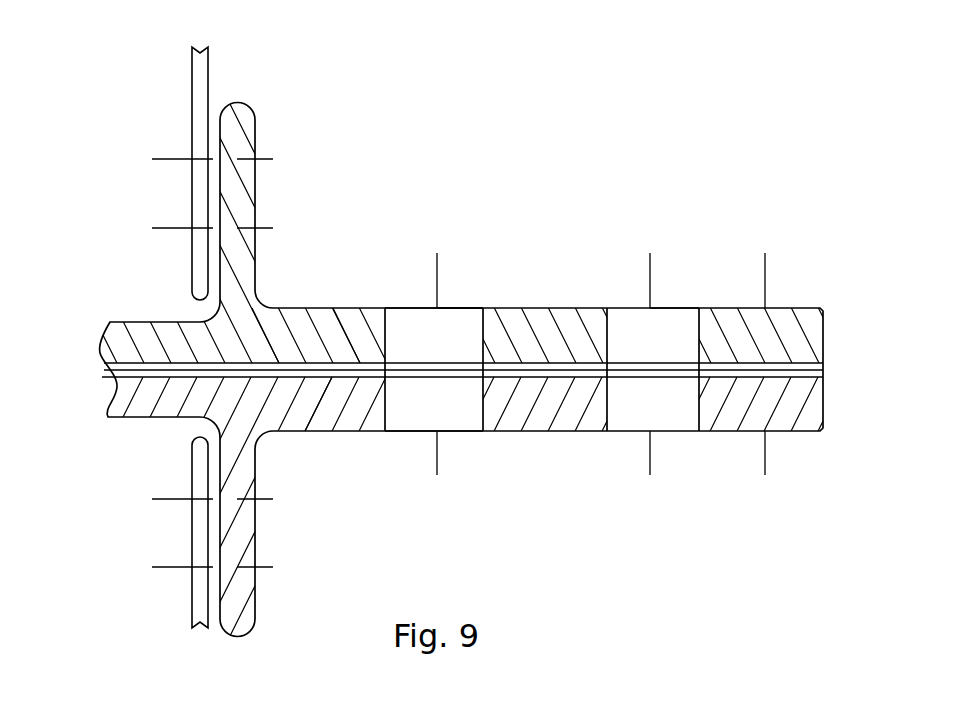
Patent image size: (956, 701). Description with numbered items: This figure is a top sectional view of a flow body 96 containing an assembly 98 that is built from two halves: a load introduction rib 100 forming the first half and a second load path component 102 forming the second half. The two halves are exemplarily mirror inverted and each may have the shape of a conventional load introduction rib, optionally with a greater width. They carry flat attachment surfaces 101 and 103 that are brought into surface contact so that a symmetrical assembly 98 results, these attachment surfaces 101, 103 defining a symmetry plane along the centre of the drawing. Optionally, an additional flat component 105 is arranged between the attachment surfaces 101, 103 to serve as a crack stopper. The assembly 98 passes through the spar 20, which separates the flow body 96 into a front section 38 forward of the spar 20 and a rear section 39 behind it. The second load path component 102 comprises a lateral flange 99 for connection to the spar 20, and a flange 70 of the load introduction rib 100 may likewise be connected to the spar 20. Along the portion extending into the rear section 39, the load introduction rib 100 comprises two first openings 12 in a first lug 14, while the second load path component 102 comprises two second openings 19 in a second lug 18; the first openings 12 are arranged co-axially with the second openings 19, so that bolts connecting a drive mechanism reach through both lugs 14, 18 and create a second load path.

The first openings 12 is at (452, 431).
The first lug 14 is at (565, 431).
The second lug 18 is at (568, 320).
The second openings 19 is at (457, 323).
The spar 20 is at (198, 527).
The front section 38 is at (122, 168).
The rear section 39 is at (643, 124).
The flange 70 is at (245, 618).
The flow body 96 is at (160, 90).
The assembly 98 is at (108, 298).
The lateral flange 99 is at (238, 133).
The load introduction rib 100 is at (363, 431).
The flat attachment surface 101 is at (333, 374).
The second load path component 102 is at (293, 320).
The flat attachment surface 103 is at (353, 340).
The additional flat component 105 is at (818, 320).